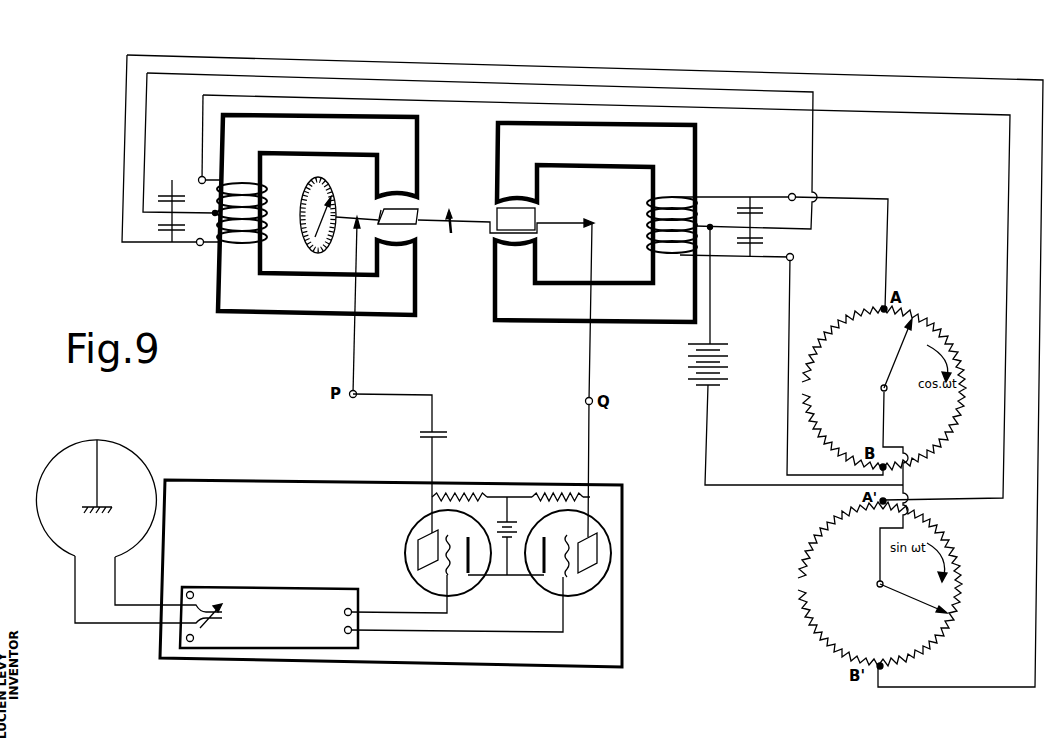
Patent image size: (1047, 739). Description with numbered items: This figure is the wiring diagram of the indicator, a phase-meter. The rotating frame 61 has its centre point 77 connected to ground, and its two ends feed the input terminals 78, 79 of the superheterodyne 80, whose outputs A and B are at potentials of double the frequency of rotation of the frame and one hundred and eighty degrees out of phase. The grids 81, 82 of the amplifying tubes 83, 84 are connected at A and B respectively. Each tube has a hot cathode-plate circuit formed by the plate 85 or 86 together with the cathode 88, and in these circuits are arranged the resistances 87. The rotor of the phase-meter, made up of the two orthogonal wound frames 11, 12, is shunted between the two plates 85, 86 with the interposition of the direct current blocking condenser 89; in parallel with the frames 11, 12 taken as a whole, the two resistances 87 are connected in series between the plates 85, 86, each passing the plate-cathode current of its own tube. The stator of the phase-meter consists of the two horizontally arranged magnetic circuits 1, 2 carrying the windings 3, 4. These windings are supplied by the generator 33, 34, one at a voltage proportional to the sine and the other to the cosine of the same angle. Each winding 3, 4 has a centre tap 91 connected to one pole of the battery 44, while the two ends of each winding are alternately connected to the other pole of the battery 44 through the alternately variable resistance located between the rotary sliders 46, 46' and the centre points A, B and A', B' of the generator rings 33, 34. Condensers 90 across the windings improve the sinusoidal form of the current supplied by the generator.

The magnetic circuit 1 is at (252, 303).
The magnetic circuit 2 is at (547, 310).
The winding 3 is at (227, 247).
The winding 4 is at (650, 242).
The frame 11 is at (417, 217).
The frame 12 is at (537, 217).
The generator 33 is at (923, 433).
The generator 34 is at (823, 553).
The battery 44 is at (698, 381).
The rotary slider 46 is at (883, 353).
The rotary slider 46' is at (911, 610).
The frame 61 is at (140, 470).
The centre point 77 is at (101, 476).
The input terminal 78 is at (202, 597).
The input terminal 79 is at (204, 638).
The superheterodyne 80 is at (277, 603).
The grid 81 is at (447, 583).
The grid 82 is at (565, 578).
The amplifying tube 83 is at (417, 523).
The amplifying tube 84 is at (597, 527).
The plate 85 is at (420, 555).
The plate 86 is at (598, 553).
The resistance 87 is at (463, 493).
The hot cathode 88 is at (468, 574).
The direct current blocking condenser 89 is at (420, 437).
The condenser 90 is at (172, 196).
The centre tap 91 is at (215, 212).